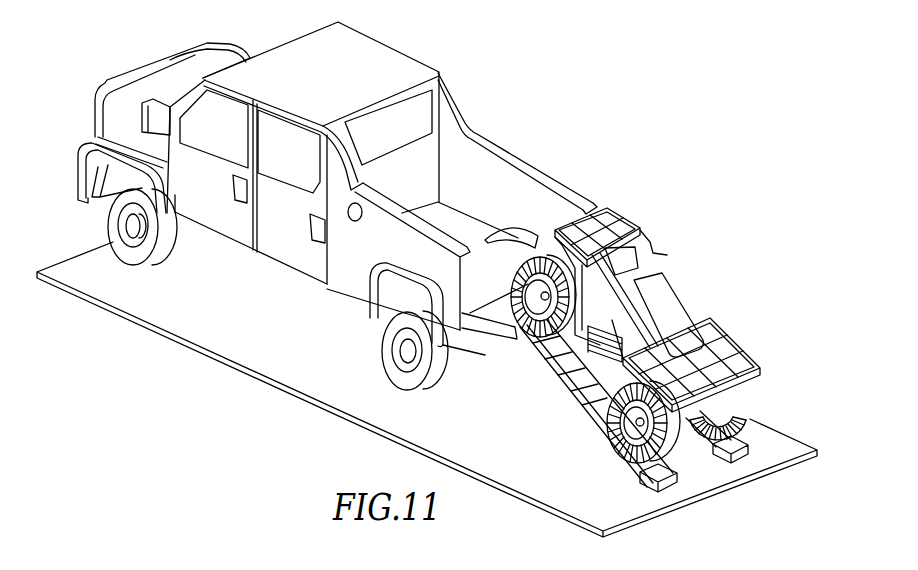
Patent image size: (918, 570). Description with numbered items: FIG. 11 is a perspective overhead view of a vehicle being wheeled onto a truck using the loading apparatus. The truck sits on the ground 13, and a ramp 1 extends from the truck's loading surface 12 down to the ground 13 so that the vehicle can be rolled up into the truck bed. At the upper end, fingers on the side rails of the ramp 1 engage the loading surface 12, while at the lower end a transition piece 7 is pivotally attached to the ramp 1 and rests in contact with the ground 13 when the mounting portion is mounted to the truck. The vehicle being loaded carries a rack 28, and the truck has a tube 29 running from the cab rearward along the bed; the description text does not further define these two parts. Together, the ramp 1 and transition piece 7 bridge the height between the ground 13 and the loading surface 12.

The ramp 1 is at (547, 368).
The transition piece 7 is at (646, 491).
The loading surface 12 is at (497, 313).
The ground 13 is at (268, 352).
The all-terrain vehicle with cargo rack 28 is at (620, 229).
The roll bar tubes 29 is at (451, 140).